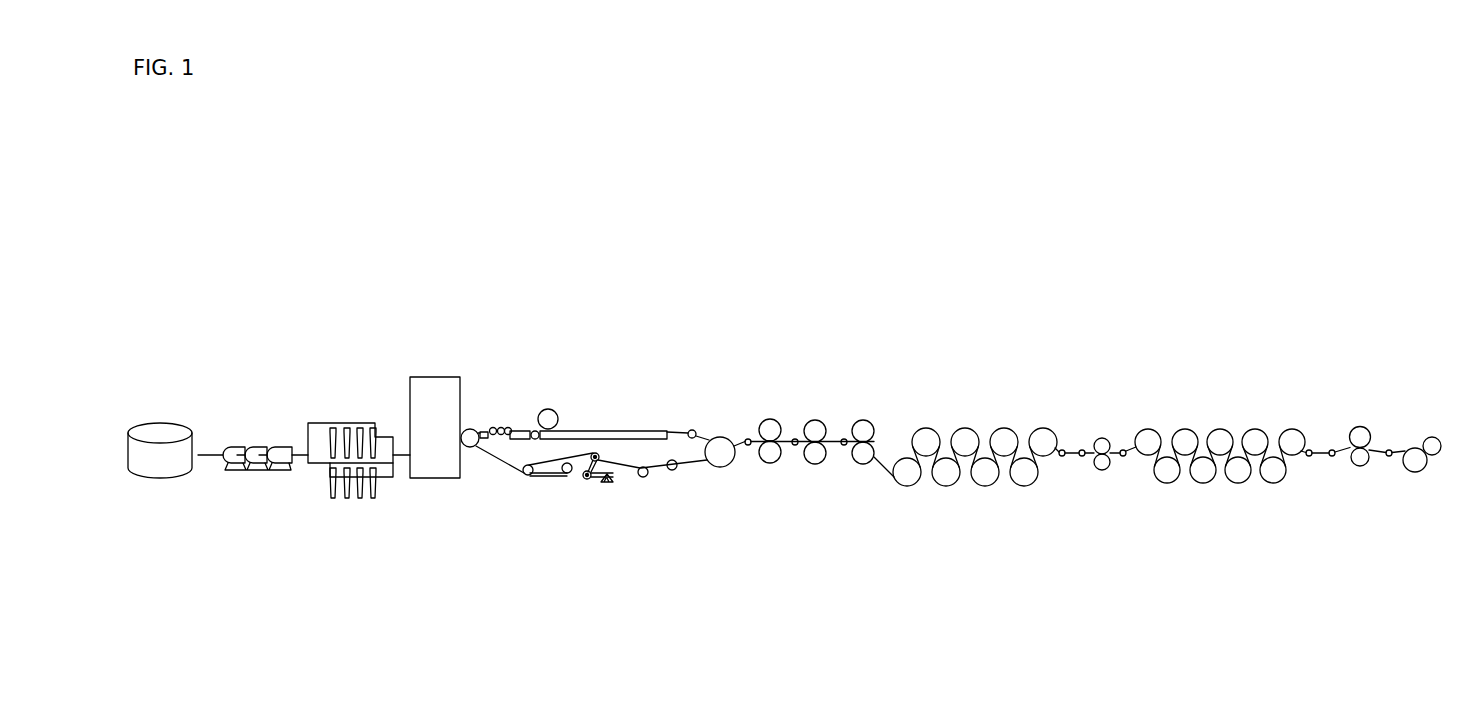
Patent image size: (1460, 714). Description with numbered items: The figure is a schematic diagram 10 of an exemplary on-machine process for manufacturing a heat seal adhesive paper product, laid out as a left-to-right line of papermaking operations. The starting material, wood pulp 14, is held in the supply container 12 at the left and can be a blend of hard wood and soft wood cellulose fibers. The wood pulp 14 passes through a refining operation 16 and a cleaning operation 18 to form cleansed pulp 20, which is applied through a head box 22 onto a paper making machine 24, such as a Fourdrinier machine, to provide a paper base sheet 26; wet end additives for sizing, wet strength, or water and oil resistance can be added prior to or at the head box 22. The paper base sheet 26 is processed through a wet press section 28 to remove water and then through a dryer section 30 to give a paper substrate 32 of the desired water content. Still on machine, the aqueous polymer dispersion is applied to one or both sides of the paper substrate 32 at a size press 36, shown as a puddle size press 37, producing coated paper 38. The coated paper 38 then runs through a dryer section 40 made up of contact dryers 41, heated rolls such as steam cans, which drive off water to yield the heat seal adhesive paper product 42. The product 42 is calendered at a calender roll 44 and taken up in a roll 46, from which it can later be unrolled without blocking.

The schematic diagram 10 is at (785, 305).
The supply container 12 is at (168, 432).
The wood pulp 14 is at (145, 433).
The refining operation 16 is at (257, 437).
The cleaning operation 18 is at (358, 415).
The cleansed pulp 20 is at (403, 448).
The head box 22 is at (432, 375).
The paper making machine 24 is at (573, 407).
The paper base sheet 26 is at (680, 430).
The wet press section 28 is at (832, 408).
The dryer section 30 is at (990, 405).
The paper substrate 32 is at (1072, 450).
The size press 36 is at (1098, 428).
The puddle size press 37 is at (1103, 470).
The coated paper 38 is at (1112, 453).
The dryer section 40 is at (1242, 387).
The contact dryers 41 is at (1185, 428).
The heat seal adhesive paper product 42 is at (1320, 452).
The calender roll 44 is at (1360, 424).
The roll 46 is at (1428, 436).